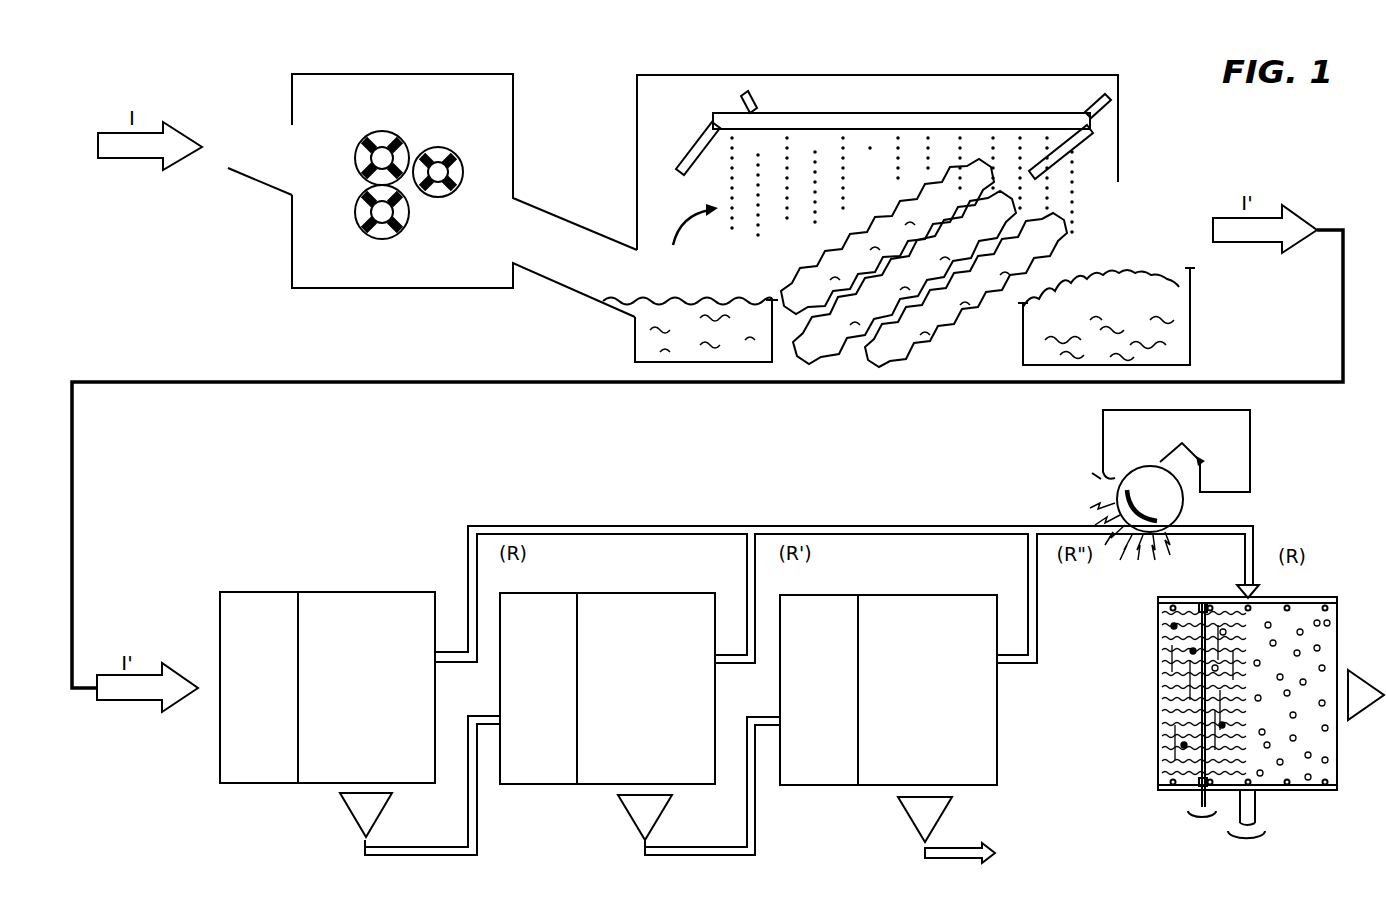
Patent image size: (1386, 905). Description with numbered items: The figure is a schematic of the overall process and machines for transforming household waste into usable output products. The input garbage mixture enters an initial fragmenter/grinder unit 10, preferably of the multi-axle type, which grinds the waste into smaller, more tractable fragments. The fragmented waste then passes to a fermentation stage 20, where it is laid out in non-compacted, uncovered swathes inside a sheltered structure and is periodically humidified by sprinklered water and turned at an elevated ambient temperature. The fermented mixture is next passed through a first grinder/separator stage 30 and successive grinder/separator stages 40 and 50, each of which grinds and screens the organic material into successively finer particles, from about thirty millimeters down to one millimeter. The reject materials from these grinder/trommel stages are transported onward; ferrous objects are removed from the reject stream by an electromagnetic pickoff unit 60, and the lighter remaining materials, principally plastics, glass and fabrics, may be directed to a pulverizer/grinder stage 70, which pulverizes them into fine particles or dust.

The fragmenter/grinder unit 10 is at (408, 62).
The fermentation stage 20 is at (893, 70).
The first grinder/separator stage 30 is at (313, 575).
The grinder/separator stage 40 is at (591, 577).
The grinder/separator stage 50 is at (873, 578).
The electromagnetic pickoff unit 60 is at (1058, 491).
The pulverizer/grinder stage 70 is at (1138, 666).